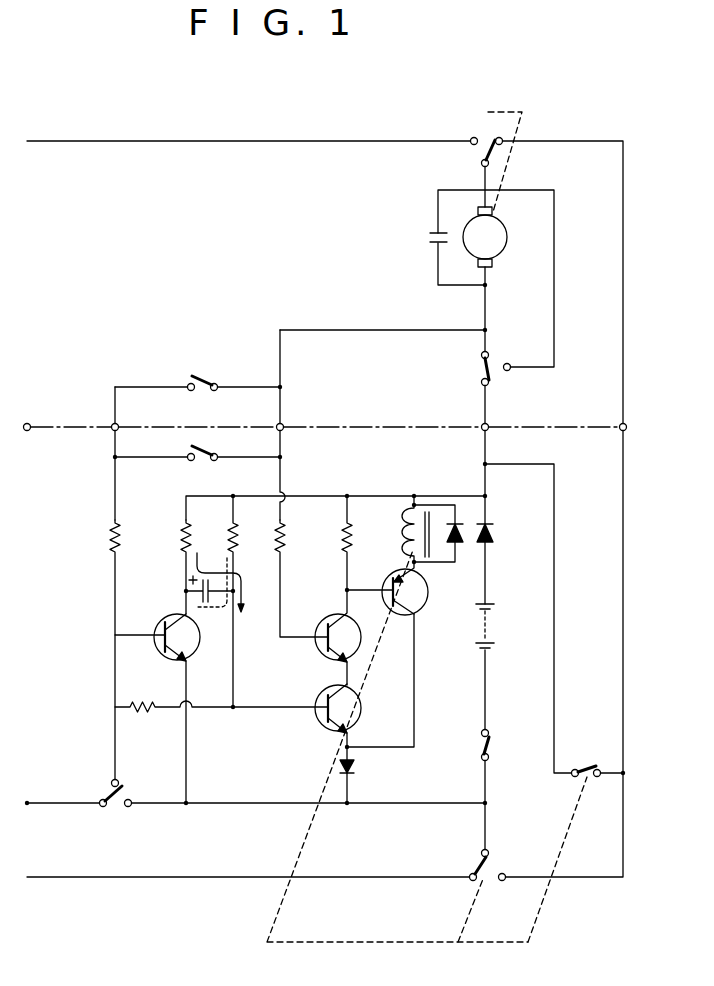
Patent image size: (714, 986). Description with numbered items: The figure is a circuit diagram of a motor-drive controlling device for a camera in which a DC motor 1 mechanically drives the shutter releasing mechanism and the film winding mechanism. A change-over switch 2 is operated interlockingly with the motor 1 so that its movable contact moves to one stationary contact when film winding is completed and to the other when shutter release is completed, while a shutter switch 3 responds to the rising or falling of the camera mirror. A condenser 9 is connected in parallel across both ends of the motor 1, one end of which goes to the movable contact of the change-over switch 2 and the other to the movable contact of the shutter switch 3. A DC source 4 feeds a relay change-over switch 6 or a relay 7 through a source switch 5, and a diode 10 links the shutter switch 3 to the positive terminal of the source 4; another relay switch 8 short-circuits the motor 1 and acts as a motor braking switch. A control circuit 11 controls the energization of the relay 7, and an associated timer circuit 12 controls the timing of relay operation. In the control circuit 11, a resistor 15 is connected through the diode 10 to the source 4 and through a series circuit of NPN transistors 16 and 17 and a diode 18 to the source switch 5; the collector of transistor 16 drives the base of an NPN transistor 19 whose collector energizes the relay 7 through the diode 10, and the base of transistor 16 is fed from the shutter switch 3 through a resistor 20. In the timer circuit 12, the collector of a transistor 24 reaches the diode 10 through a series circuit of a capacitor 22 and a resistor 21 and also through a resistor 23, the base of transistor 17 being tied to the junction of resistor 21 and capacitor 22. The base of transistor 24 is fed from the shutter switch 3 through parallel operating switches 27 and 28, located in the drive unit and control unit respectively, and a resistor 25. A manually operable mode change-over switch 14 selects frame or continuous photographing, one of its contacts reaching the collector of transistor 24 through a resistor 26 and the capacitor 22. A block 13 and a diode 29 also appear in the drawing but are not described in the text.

The motor 1 is at (506, 250).
The change-over switch 2 is at (483, 138).
The shutter switch 3 is at (480, 368).
The DC source 4 is at (494, 613).
The source switch 5 is at (490, 744).
The change-over switch of the relay 6 is at (491, 873).
The relay 7 is at (403, 532).
The relay switch 8 is at (588, 767).
The condenser 9 is at (428, 238).
The diode 10 is at (494, 530).
The control circuit 11 is at (453, 686).
The timer circuit 12 is at (77, 651).
The switching circuit 13 is at (148, 329).
The mode change-over switch 14 is at (118, 811).
The resistor 15 is at (350, 536).
The transistor 16 is at (358, 650).
The transistor 17 is at (358, 712).
The diode 18 is at (357, 768).
The transistor 19 is at (424, 596).
The resistor 20 is at (284, 540).
The resistor 21 is at (238, 546).
The capacitor 22 is at (188, 597).
The resistor 23 is at (183, 543).
The transistor 24 is at (196, 648).
The resistor 25 is at (112, 543).
The resistor 26 is at (147, 713).
The operating switch 27 is at (203, 374).
The operating switch 28 is at (209, 437).
The diode 29 is at (462, 545).